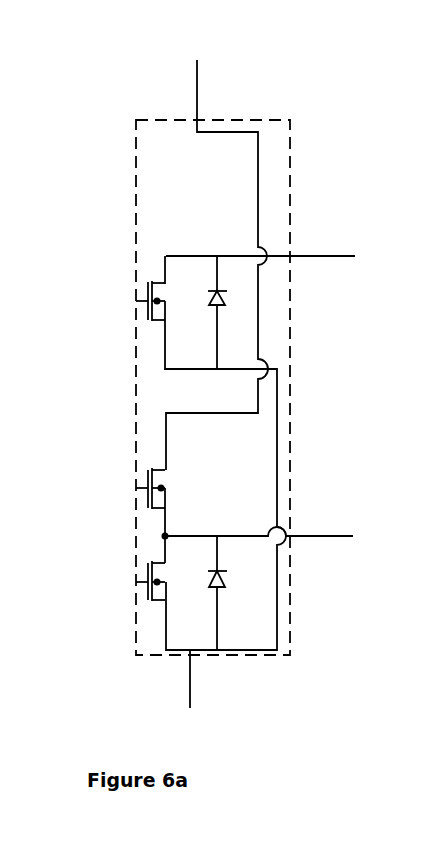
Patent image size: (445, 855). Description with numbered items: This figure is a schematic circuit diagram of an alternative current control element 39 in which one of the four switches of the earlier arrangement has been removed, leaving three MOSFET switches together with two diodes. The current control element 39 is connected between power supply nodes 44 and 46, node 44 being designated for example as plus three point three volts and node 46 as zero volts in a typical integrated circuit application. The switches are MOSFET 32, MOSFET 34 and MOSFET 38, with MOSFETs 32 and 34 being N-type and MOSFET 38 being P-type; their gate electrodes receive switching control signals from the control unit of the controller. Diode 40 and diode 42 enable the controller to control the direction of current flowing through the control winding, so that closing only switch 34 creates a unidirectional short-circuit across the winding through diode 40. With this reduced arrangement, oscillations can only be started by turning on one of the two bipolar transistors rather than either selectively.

The MOSFET 32 is at (137, 280).
The MOSFET 34 is at (136, 598).
The MOSFET 38 is at (136, 508).
The current control element 39 is at (292, 585).
The diode 40 is at (234, 282).
The diode 42 is at (232, 585).
The power supply node 44 is at (198, 90).
The power supply node 46 is at (190, 665).